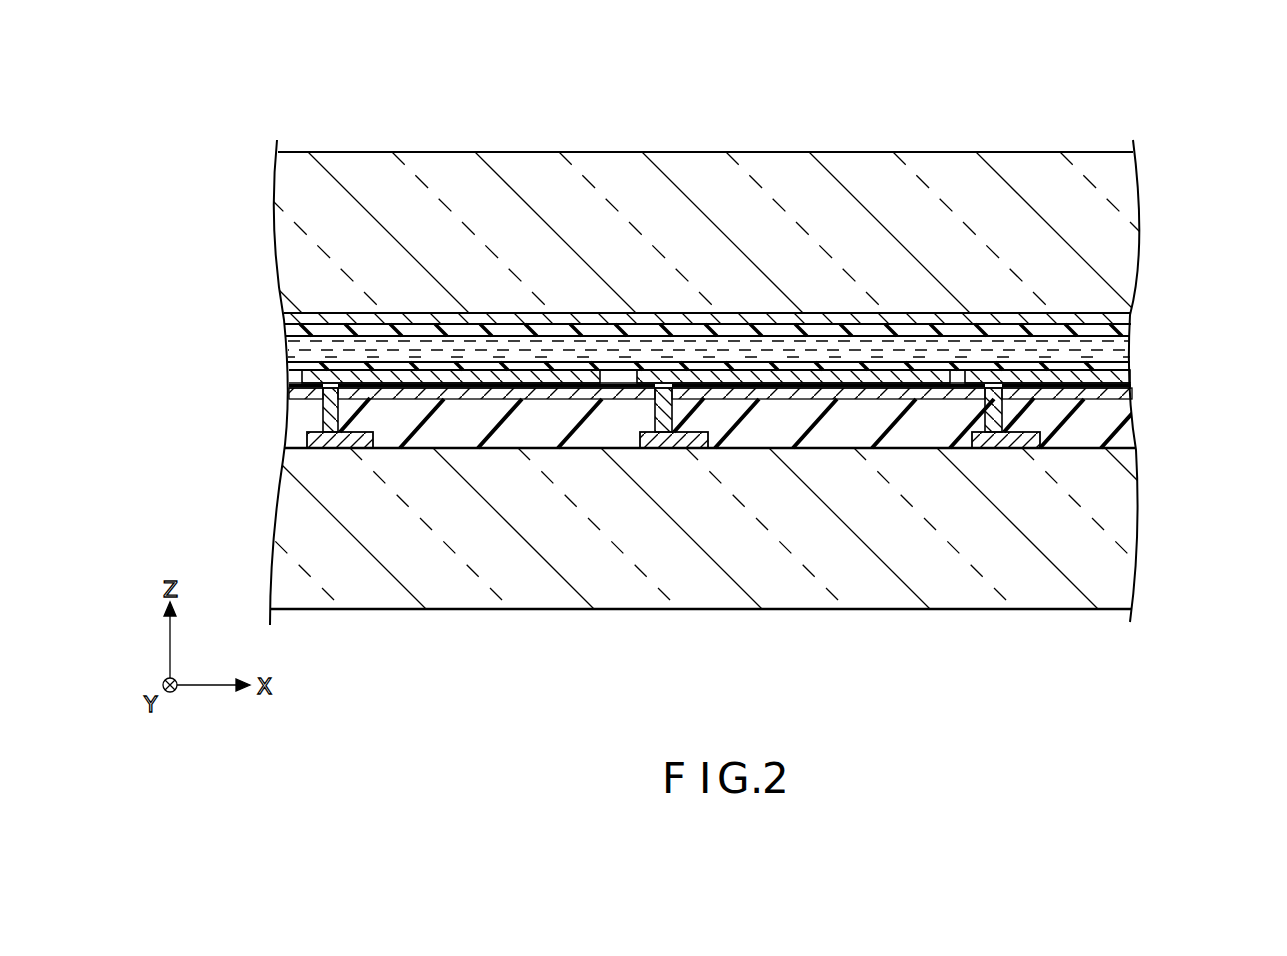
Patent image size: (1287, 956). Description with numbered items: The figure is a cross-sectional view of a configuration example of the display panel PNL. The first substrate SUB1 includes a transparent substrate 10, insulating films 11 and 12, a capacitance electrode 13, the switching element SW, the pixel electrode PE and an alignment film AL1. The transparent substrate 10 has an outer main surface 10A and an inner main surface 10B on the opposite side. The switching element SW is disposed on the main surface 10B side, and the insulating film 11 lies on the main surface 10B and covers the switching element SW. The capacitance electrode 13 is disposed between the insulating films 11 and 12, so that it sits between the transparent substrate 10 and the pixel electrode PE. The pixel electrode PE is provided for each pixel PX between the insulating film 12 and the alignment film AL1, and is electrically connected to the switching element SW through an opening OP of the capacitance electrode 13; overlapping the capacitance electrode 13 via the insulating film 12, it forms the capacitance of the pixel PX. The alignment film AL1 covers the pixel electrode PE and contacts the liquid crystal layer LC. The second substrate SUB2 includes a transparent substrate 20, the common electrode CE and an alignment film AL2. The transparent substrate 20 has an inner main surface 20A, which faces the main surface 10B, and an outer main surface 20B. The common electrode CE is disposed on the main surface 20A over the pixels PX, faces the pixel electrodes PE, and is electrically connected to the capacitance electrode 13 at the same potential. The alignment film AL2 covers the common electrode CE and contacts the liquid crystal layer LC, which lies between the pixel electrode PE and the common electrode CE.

The display panel PNL is at (705, 386).
The first substrate SUB1 is at (726, 400).
The second substrate SUB2 is at (705, 214).
The transparent substrate 10 is at (280, 562).
The main surface 10A is at (916, 611).
The main surface 10B is at (836, 440).
The insulating film 11 is at (290, 434).
The insulating film 12 is at (290, 377).
The capacitance electrode 13 is at (287, 391).
The switching element SW is at (325, 447).
The opening OP is at (320, 404).
The pixel electrode PE is at (495, 370).
The pixel PX is at (505, 424).
The alignment film AL1 is at (289, 364).
The alignment film AL2 is at (1130, 330).
The liquid crystal layer LC is at (1125, 358).
The common electrode CE is at (1131, 318).
The transparent substrate 20 is at (282, 229).
The main surface 20A is at (875, 322).
The main surface 20B is at (924, 153).